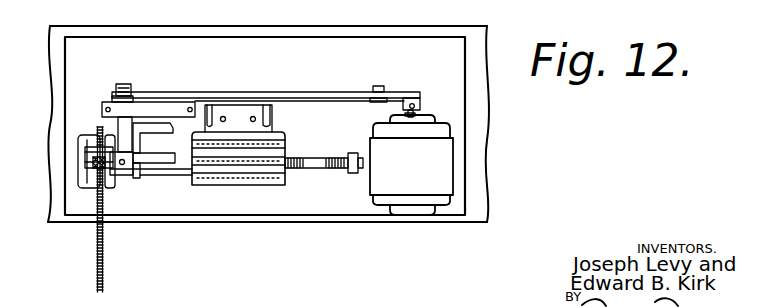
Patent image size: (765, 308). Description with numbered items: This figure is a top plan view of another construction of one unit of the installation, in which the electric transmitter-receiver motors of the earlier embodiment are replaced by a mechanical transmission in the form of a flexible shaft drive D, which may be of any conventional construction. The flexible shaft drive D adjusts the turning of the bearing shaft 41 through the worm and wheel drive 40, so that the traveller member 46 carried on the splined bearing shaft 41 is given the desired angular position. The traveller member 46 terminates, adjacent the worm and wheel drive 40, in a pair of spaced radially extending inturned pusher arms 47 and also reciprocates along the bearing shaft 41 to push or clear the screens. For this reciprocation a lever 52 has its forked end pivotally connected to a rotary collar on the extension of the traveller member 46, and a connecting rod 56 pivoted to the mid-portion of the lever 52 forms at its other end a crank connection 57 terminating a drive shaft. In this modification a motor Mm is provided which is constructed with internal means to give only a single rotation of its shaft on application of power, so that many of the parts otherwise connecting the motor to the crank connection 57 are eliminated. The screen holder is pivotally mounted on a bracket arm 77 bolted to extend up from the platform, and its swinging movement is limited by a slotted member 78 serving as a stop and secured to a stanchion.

The worm and wheel drive 40 is at (86, 163).
The bearing shaft 41 is at (331, 169).
The traveller member 46 is at (177, 165).
The pusher arm 47 is at (160, 125).
The lever 52 is at (98, 120).
The connecting rod 56 is at (290, 82).
The crank connection 57 is at (403, 98).
The bracket arm 77 is at (272, 120).
The slotted member 78 is at (242, 186).
The motor Mm is at (427, 173).
The flexible shaft drive D is at (103, 277).